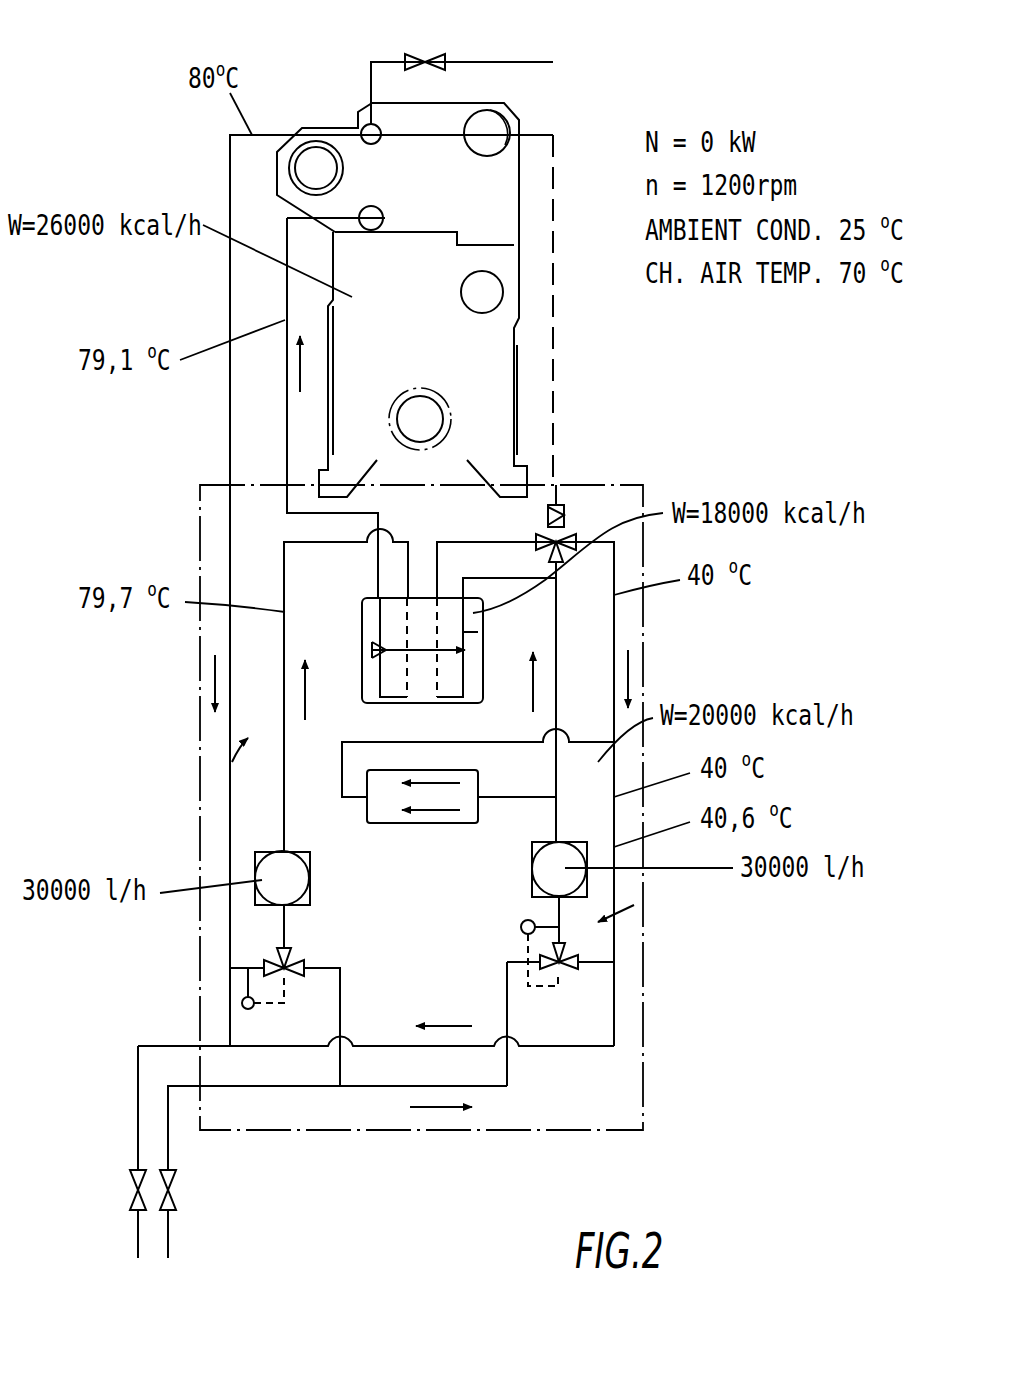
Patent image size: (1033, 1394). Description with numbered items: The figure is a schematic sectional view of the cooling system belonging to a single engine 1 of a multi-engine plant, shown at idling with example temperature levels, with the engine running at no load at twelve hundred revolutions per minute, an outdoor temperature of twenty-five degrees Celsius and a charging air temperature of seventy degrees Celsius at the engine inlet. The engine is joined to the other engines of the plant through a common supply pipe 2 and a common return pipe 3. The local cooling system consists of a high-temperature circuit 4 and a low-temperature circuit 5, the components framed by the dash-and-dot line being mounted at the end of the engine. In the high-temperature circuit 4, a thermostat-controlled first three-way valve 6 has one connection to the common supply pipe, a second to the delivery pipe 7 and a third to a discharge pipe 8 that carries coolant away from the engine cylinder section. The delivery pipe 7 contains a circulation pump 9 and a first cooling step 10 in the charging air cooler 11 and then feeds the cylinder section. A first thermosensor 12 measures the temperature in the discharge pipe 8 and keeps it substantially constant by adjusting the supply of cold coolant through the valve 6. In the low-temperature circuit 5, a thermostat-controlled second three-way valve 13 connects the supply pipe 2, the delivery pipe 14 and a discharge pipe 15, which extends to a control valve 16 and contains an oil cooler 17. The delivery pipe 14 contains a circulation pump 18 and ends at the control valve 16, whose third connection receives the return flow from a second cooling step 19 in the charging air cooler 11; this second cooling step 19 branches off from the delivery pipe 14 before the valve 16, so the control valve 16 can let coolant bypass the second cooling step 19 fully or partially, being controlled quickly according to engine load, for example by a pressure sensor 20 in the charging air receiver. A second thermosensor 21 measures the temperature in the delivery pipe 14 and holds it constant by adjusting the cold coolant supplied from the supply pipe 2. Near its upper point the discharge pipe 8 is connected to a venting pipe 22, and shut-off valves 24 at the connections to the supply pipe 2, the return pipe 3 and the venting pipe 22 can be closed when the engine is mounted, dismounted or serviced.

The engine 1 is at (394, 332).
The common supply pipe 2 is at (168, 1238).
The common return pipe 3 is at (136, 1238).
The high-temperature circuit 4 is at (207, 752).
The low-temperature circuit 5 is at (638, 906).
The first three-way valve 6 is at (294, 962).
The delivery pipe 7 is at (285, 808).
The discharge pipe 8 is at (230, 398).
The circulation pump 9 is at (310, 878).
The first cooling step 10 is at (362, 616).
The charging air cooler 11 is at (440, 700).
The first thermosensor 12 is at (262, 1008).
The second three-way valve 13 is at (566, 975).
The delivery pipe 14 is at (540, 828).
The discharge pipe 15 is at (614, 626).
The control valve 16 is at (560, 540).
The oil cooler 17 is at (410, 823).
The circulation pump 18 is at (540, 878).
The second cooling step 19 is at (478, 632).
The pressure sensor 20 is at (516, 121).
The second thermosensor 21 is at (522, 932).
The venting pipe 22 is at (520, 62).
The shut-off valves 24 is at (410, 54).